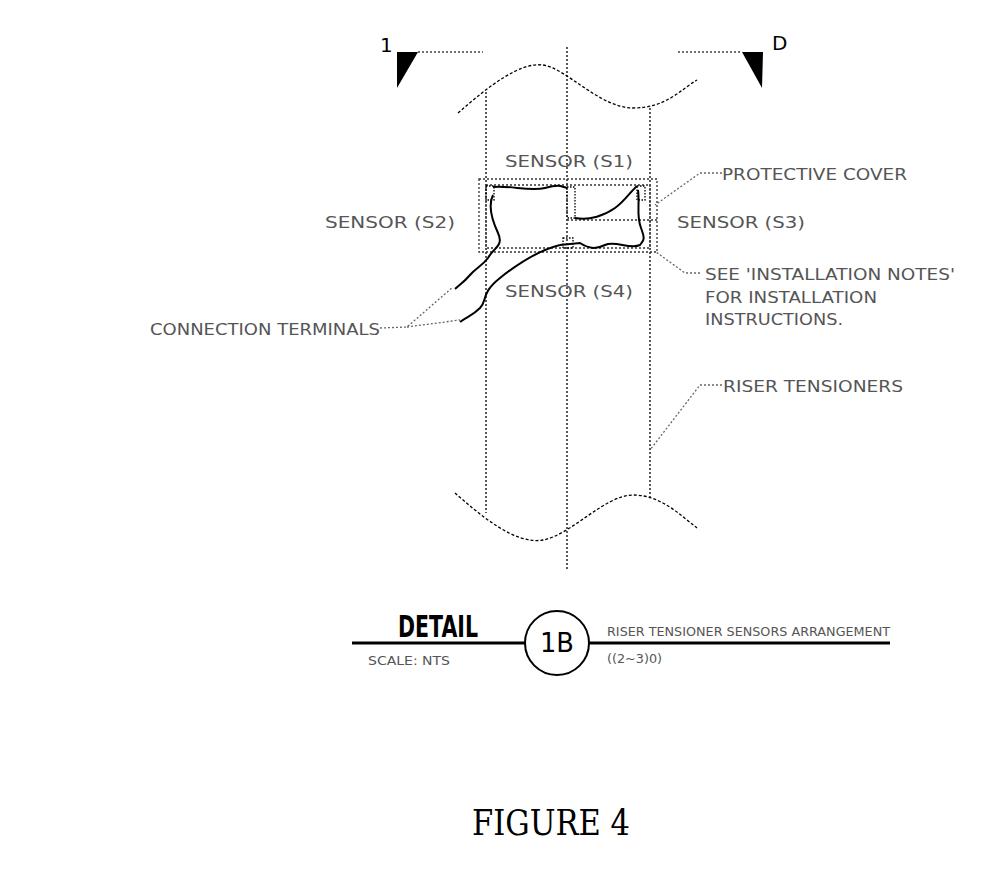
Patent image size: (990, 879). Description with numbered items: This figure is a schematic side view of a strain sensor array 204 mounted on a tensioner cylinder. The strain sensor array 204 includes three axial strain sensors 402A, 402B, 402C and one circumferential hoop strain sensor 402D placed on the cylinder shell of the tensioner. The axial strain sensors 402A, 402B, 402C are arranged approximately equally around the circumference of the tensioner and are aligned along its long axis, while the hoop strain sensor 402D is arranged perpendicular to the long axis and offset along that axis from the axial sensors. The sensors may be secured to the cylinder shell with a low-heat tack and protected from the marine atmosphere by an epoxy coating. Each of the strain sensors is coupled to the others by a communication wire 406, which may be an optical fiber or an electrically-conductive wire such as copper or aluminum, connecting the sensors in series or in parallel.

The strain sensor array 204 is at (591, 180).
The axial strain sensor 402A is at (486, 197).
The axial strain sensor 402B is at (566, 195).
The axial strain sensor 402C is at (648, 196).
The circumferential hoop strain sensor 402D is at (566, 245).
The communication wire 406 is at (477, 265).